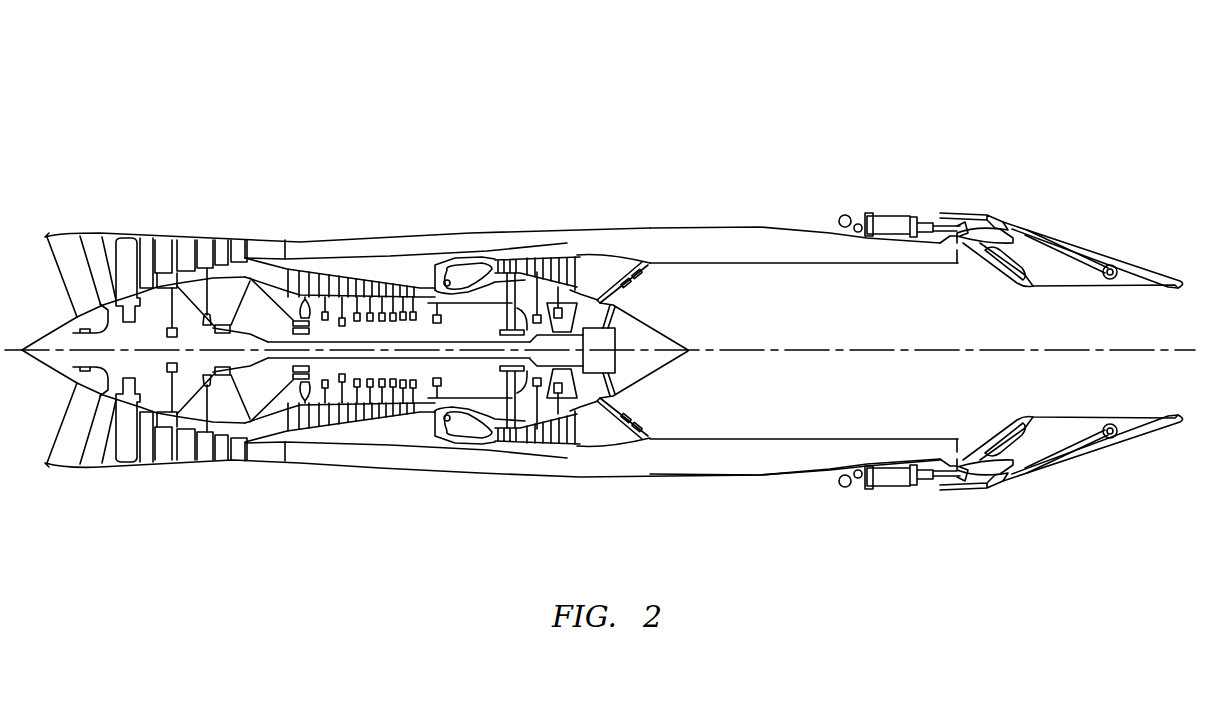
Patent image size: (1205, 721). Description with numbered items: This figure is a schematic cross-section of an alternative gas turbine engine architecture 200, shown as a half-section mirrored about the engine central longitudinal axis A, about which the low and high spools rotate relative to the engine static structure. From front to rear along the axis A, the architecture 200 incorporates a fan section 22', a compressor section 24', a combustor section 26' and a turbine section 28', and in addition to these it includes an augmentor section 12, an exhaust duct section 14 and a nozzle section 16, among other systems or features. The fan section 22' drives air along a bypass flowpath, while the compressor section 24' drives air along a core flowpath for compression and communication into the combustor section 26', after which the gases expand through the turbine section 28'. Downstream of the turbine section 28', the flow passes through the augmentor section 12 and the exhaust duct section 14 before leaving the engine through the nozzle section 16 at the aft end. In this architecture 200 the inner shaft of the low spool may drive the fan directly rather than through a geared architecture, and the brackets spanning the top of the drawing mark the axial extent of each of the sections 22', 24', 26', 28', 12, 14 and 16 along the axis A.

The engine architecture 200 is at (891, 56).
The fan section 22' is at (145, 293).
The compressor section 24' is at (386, 282).
The combustor section 26' is at (476, 283).
The turbine section 28' is at (539, 283).
The augmentor section 12 is at (578, 172).
The exhaust duct section 14 is at (950, 172).
The nozzle section 16 is at (1182, 172).
The engine central longitudinal axis A is at (942, 353).